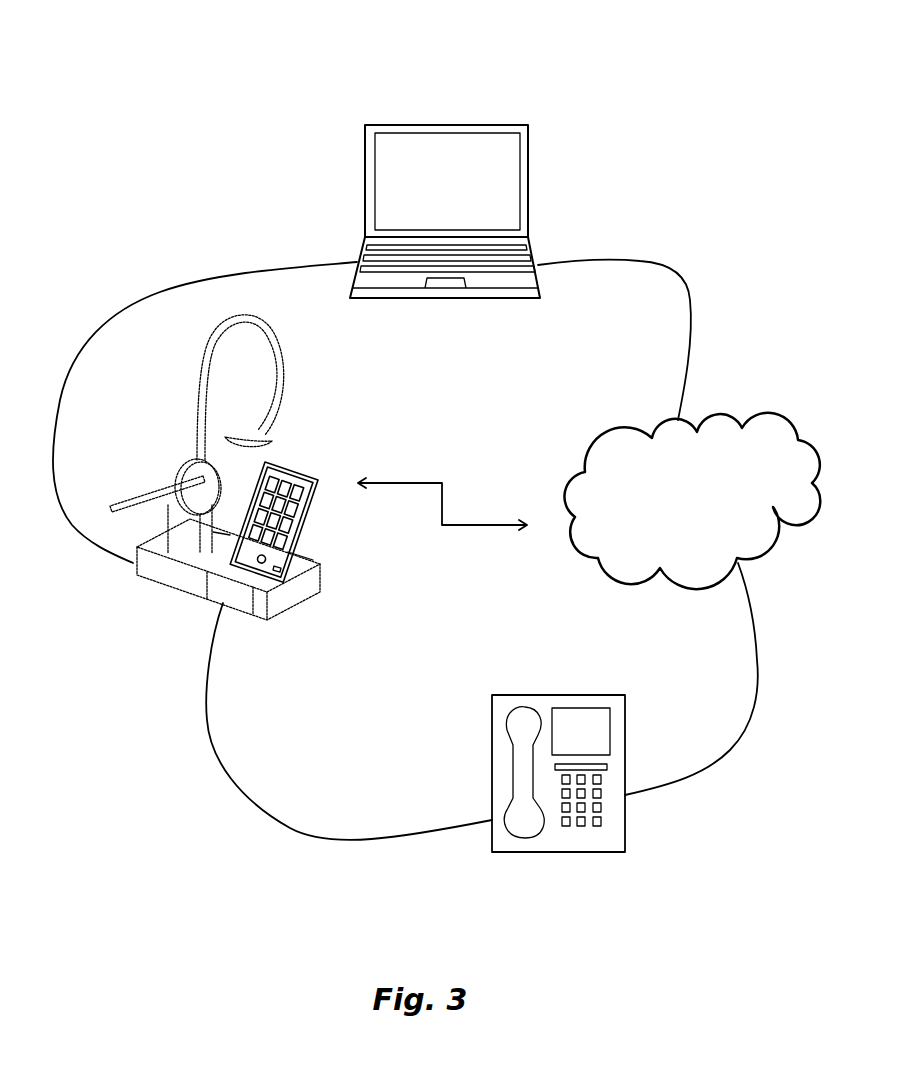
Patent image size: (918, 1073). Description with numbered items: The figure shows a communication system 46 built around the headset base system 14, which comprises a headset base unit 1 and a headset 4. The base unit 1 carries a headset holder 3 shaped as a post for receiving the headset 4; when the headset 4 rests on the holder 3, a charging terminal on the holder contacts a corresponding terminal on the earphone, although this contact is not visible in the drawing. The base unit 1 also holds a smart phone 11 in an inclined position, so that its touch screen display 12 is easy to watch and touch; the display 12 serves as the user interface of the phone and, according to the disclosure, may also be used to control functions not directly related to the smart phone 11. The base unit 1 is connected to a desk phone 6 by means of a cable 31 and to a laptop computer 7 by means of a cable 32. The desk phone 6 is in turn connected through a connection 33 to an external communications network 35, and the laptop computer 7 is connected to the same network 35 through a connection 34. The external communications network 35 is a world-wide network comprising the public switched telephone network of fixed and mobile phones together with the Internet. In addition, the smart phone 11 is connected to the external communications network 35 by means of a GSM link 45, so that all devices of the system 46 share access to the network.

The headset base unit 1 is at (287, 603).
The headset holder 3 is at (187, 533).
The headset 4 is at (203, 403).
The desk phone 6 is at (560, 835).
The laptop computer 7 is at (488, 150).
The smart phone 11 is at (297, 527).
The touch screen display 12 is at (293, 470).
The headset base system 14 is at (174, 627).
The cable 31 is at (250, 805).
The cable 32 is at (177, 285).
The connection 33 is at (737, 753).
The connection 34 is at (667, 263).
The external communications network 35 is at (676, 515).
The GSM link 45 is at (442, 504).
The communication system 46 is at (218, 914).